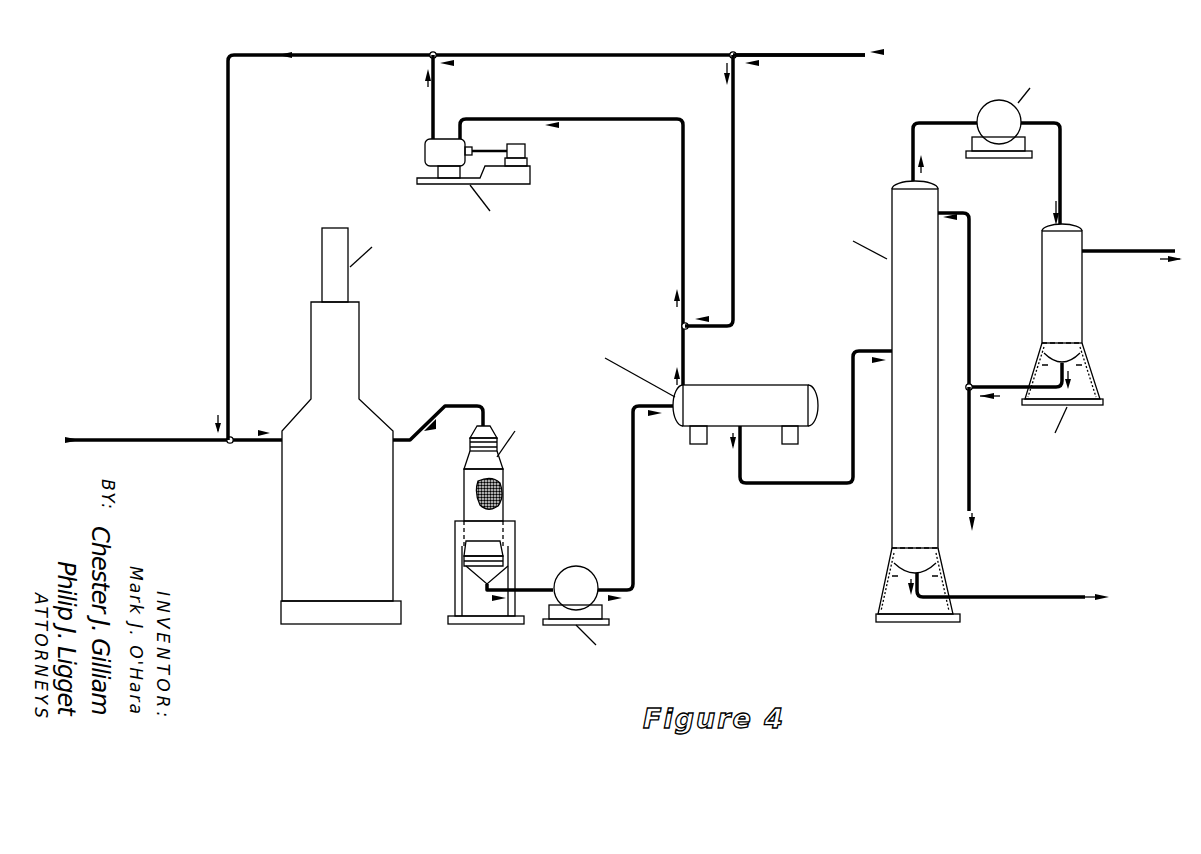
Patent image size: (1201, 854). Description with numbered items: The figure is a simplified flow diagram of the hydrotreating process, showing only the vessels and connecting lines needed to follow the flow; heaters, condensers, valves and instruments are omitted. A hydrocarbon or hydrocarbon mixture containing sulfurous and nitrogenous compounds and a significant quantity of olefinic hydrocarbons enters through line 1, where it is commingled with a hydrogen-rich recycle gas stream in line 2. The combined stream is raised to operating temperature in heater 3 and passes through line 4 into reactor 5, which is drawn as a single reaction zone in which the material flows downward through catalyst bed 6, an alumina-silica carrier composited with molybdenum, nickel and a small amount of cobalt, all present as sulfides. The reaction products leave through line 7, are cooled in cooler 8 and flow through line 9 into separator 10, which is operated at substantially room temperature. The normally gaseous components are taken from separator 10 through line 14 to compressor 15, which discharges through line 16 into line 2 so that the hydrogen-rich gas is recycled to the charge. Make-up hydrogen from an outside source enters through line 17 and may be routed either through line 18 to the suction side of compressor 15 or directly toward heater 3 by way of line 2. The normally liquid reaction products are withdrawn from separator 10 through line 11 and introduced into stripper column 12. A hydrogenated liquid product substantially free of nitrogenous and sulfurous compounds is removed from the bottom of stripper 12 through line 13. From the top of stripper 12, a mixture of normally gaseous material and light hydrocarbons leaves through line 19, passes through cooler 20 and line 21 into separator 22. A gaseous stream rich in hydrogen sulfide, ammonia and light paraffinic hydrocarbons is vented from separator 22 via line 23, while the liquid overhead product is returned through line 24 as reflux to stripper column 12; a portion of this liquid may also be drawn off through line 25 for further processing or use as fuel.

The line 1 is at (165, 437).
The line 2 is at (560, 54).
The heater 3 is at (312, 348).
The line 4 is at (450, 403).
The reactor 5 is at (465, 486).
The catalyst bed 6 is at (503, 491).
The line 7 is at (526, 585).
The cooler 8 is at (586, 566).
The line 9 is at (637, 524).
The separator 10 is at (758, 384).
The line 11 is at (806, 486).
The stripper column 12 is at (890, 330).
The line 13 is at (1030, 596).
The line 14 is at (568, 118).
The compressor 15 is at (425, 142).
The line 16 is at (436, 100).
The line 17 is at (778, 55).
The line 18 is at (738, 190).
The line 19 is at (913, 162).
The cooler 20 is at (978, 108).
The line 21 is at (1068, 196).
The separator 22 is at (1040, 272).
The line 23 is at (1112, 251).
The line 24 is at (1005, 385).
The line 25 is at (975, 502).